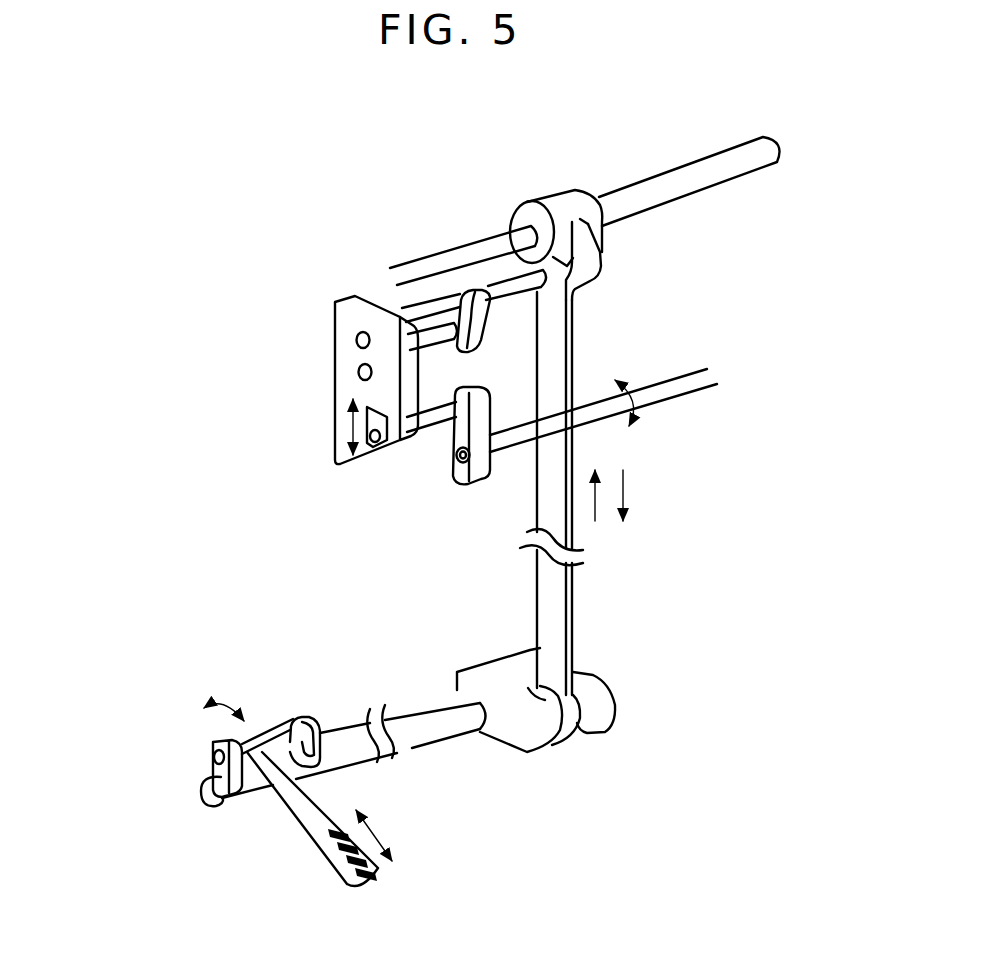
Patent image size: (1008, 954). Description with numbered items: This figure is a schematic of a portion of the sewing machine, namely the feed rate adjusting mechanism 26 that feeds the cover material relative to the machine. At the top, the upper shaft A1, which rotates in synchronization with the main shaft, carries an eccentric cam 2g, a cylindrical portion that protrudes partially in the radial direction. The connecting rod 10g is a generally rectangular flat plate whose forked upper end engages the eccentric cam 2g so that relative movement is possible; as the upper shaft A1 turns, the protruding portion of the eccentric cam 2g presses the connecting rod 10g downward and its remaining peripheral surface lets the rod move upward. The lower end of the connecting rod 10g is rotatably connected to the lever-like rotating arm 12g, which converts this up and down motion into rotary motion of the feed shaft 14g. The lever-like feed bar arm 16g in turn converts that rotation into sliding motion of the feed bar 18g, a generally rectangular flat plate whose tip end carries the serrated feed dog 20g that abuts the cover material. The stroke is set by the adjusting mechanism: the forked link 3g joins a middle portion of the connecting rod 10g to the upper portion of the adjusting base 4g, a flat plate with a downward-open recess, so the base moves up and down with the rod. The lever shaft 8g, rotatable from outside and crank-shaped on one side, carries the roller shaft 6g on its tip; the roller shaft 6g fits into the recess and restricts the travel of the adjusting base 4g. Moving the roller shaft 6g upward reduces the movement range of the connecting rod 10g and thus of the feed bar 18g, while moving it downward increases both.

The feed rate adjusting mechanism 26 is at (333, 255).
The eccentric cam 2g is at (558, 202).
The forked link 3g is at (475, 292).
The adjusting base 4g is at (348, 320).
The roller shaft 6g is at (433, 435).
The lever shaft 8g is at (520, 449).
The connecting rod 10g is at (552, 343).
The rotating arm 12g is at (600, 697).
The feed shaft 14g is at (443, 727).
The feed bar arm 16g is at (206, 757).
The feed bar 18g is at (312, 812).
The feed dog 20g is at (370, 866).
The upper shaft A1 is at (722, 178).